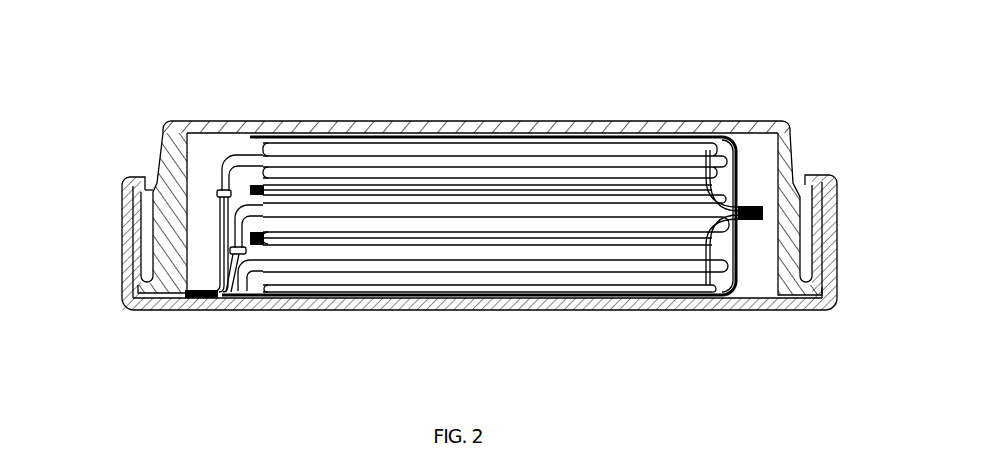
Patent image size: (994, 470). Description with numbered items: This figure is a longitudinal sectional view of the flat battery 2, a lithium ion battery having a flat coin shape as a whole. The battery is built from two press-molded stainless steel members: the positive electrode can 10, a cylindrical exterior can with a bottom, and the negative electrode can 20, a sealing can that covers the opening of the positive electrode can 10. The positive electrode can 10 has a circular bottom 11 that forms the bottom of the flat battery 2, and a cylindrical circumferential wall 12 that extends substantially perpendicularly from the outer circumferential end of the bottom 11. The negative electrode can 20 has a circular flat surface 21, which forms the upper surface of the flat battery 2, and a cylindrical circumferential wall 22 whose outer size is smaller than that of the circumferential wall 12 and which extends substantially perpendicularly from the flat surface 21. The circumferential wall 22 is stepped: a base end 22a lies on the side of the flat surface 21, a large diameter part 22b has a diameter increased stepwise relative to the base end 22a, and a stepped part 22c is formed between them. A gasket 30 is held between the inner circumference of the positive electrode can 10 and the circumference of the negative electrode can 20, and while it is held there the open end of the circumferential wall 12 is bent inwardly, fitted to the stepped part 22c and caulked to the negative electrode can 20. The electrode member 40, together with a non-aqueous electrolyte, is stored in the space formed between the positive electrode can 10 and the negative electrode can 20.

The flat battery 2 is at (769, 92).
The positive electrode can 10 is at (476, 313).
The bottom 11 is at (413, 312).
The circumferential wall 12 is at (121, 232).
The negative electrode can 20 is at (441, 166).
The flat surface 21 is at (586, 121).
The circumferential wall 22 is at (441, 184).
The base end 22a is at (163, 130).
The large diameter part 22b is at (137, 213).
The stepped part 22c is at (153, 188).
The gasket 30 is at (175, 299).
The electrode member 40 is at (751, 268).